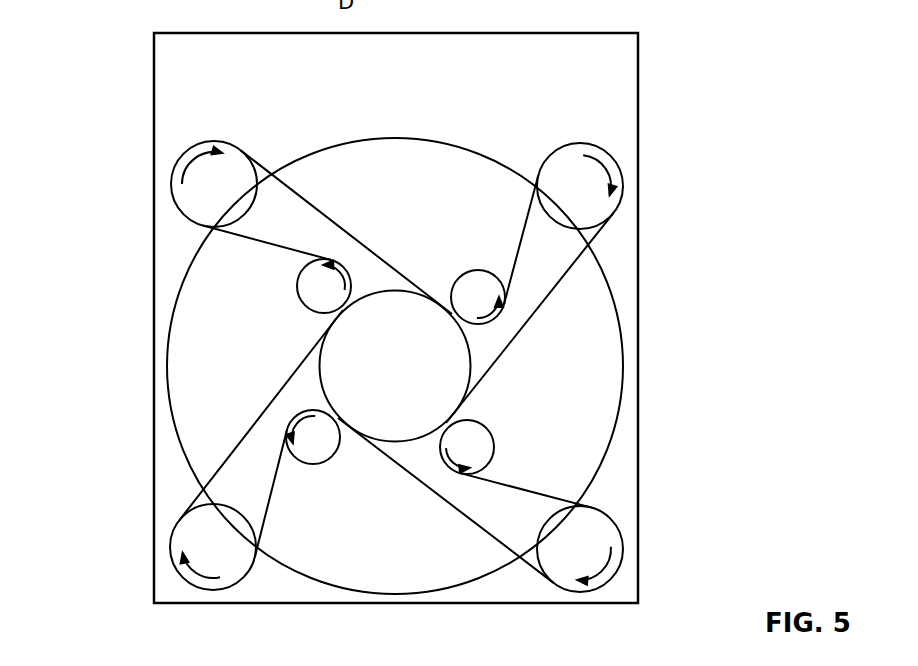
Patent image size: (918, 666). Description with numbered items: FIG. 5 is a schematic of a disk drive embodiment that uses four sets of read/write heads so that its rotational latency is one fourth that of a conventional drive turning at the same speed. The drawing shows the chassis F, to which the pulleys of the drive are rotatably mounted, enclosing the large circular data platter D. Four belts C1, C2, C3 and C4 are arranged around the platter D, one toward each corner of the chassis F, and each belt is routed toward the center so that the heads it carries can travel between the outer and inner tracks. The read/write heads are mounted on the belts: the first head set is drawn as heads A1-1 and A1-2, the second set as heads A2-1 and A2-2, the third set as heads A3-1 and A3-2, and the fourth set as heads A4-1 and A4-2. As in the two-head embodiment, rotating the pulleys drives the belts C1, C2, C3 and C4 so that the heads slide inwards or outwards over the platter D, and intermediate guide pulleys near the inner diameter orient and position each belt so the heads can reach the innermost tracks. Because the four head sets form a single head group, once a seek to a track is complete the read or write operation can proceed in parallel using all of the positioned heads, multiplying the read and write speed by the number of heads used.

The chassis F is at (596, 50).
The drum D is at (191, 383).
The belt C1 is at (600, 144).
The belt C2 is at (608, 510).
The belt C3 is at (200, 142).
The belt C4 is at (253, 572).
The read/write head of first head set A1-1 is at (277, 181).
The read/write head of first head set A1-2 is at (447, 301).
The read/write head of second head set A2-1 is at (592, 251).
The read/write head of second head set A2-2 is at (460, 417).
The read/write head of third head set A3-1 is at (513, 548).
The read/write head of third head set A3-2 is at (348, 432).
The read/write head of fourth head set A4-1 is at (204, 483).
The read/write head of fourth head set A4-2 is at (333, 321).